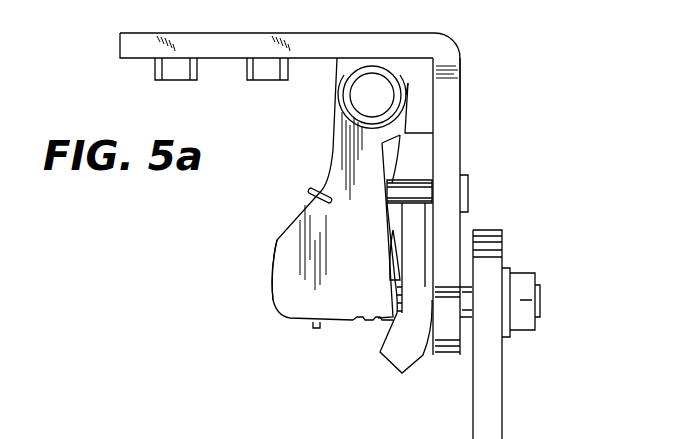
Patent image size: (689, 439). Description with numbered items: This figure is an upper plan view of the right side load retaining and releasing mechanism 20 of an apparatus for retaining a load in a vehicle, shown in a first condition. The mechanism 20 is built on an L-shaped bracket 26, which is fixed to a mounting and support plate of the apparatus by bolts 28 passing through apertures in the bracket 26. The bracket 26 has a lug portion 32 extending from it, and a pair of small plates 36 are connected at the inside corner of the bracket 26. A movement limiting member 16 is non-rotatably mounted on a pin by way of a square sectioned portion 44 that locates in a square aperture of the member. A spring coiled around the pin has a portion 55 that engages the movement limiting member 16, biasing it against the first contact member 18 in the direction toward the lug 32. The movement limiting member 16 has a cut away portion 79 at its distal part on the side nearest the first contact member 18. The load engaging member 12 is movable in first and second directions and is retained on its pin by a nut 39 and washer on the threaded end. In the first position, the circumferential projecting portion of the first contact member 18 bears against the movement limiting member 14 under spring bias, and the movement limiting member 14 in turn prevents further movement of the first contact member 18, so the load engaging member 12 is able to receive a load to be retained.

The load engaging member 12 is at (495, 410).
The movement limiting member 14 is at (470, 187).
The movement limiting member 16 is at (296, 238).
The first contact member 18 is at (413, 220).
The load retaining and releasing mechanism 20 is at (243, 255).
The bracket 26 is at (466, 52).
The bolts 28 is at (183, 70).
The lug portion 32 is at (457, 133).
The small plates 36 is at (425, 92).
The nut 39 is at (527, 300).
The square sectioned portion 44 is at (377, 88).
The spring portion 55 is at (316, 190).
The cut away portion 79 is at (368, 330).